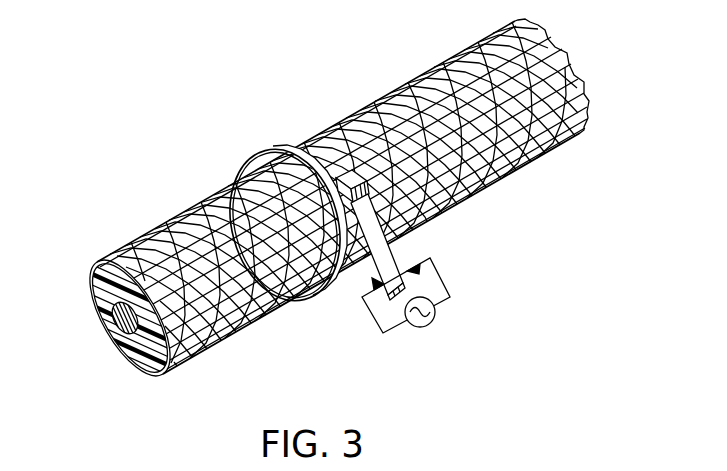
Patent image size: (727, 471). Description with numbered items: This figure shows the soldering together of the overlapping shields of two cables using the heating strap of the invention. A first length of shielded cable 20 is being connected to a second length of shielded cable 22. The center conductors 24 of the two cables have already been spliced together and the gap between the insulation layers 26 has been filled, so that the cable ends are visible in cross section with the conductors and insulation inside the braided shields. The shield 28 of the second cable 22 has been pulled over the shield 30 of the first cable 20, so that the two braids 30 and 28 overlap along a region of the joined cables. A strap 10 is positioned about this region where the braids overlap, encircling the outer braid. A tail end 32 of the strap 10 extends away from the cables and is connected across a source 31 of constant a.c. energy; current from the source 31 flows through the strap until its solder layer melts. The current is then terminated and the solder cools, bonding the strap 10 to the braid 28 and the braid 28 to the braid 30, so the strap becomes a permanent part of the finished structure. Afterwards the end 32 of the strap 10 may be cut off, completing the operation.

The strap 10 is at (300, 143).
The first length of shielded cable 20 is at (208, 271).
The second length of shielded cable 22 is at (450, 158).
The center conductors 24 is at (122, 322).
The insulation layers 26 is at (139, 362).
The shield 28 is at (493, 182).
The shield 30 is at (249, 318).
The tail end 32 is at (372, 286).
The source of constant a.c. energy 31 is at (422, 328).